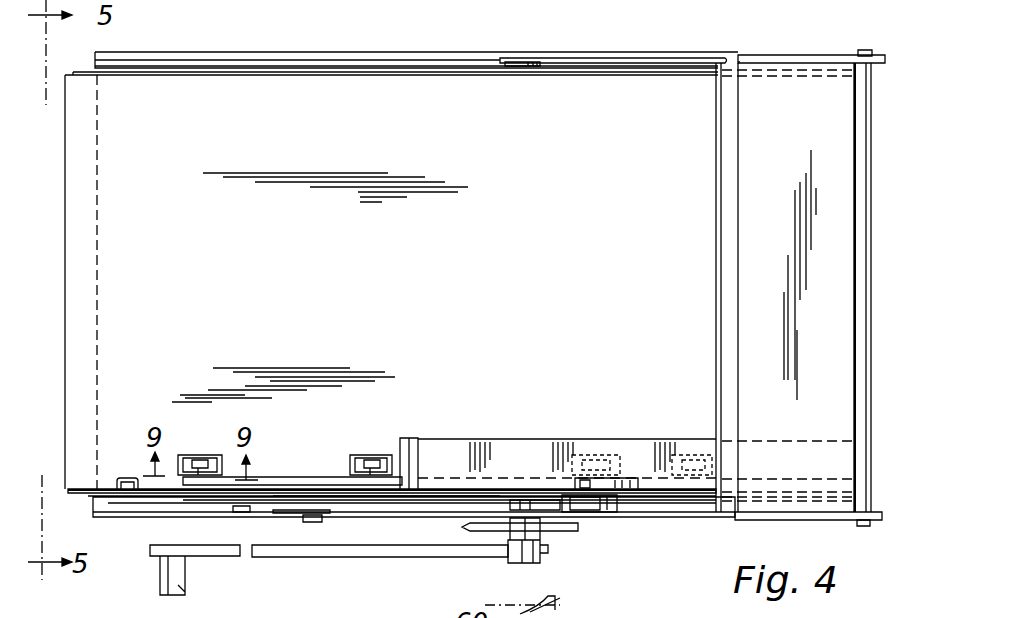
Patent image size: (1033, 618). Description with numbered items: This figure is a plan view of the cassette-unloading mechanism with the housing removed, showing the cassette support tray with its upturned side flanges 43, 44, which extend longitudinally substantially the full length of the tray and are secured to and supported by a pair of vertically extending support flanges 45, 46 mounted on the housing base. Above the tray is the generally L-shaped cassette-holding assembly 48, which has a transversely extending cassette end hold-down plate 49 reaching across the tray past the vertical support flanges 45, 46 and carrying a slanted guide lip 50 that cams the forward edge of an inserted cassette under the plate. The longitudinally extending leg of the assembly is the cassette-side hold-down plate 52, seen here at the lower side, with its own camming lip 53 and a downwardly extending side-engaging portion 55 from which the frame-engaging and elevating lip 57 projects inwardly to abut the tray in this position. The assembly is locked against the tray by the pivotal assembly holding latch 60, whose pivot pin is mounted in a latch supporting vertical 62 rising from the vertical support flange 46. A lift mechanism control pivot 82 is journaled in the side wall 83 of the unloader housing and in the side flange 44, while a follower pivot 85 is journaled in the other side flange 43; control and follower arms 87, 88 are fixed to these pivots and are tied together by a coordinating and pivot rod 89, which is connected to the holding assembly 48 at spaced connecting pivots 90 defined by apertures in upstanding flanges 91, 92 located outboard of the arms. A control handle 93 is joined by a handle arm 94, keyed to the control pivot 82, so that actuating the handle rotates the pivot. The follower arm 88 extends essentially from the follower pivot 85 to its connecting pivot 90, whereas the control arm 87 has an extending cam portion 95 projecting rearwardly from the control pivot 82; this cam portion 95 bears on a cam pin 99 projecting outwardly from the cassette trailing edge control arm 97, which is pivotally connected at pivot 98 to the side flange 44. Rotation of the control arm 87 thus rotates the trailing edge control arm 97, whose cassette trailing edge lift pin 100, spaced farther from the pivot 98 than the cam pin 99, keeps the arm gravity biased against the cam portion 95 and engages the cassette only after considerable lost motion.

The side flange 43 is at (186, 74).
The side flange 44 is at (97, 490).
The vertical support flange 45 is at (236, 68).
The vertical support flange 46 is at (88, 497).
The cassette-holding assembly 48 is at (704, 318).
The cassette end hold-down plate 49 is at (755, 270).
The slanted guide lip 50 is at (718, 184).
The cassette-side hold-down plate 52 is at (497, 445).
The lip 53 is at (418, 440).
The side-engaging portion 55 is at (318, 483).
The frame-engaging and elevating lip 57 is at (264, 478).
The assembly holding latch 60 is at (610, 512).
The latch supporting vertical 62 is at (541, 603).
The lift mechanism control pivot 82 is at (540, 536).
The side wall 83 is at (465, 526).
The follower pivot 85 is at (517, 66).
The control arm 87 is at (694, 514).
The follower arm 88 is at (568, 60).
The coordinating and pivot rod 89 is at (860, 272).
The connecting pivot 90 is at (863, 50).
The upstanding flange 91 is at (870, 520).
The upstanding flange 92 is at (883, 60).
The control handle 93 is at (188, 570).
The handle arm 94 is at (345, 557).
The cam portion 95 is at (376, 515).
The trailing edge control arm 97 is at (158, 505).
The pivot 98 is at (240, 512).
The cam pin 99 is at (306, 522).
The cassette trailing edge lift pin 100 is at (128, 478).